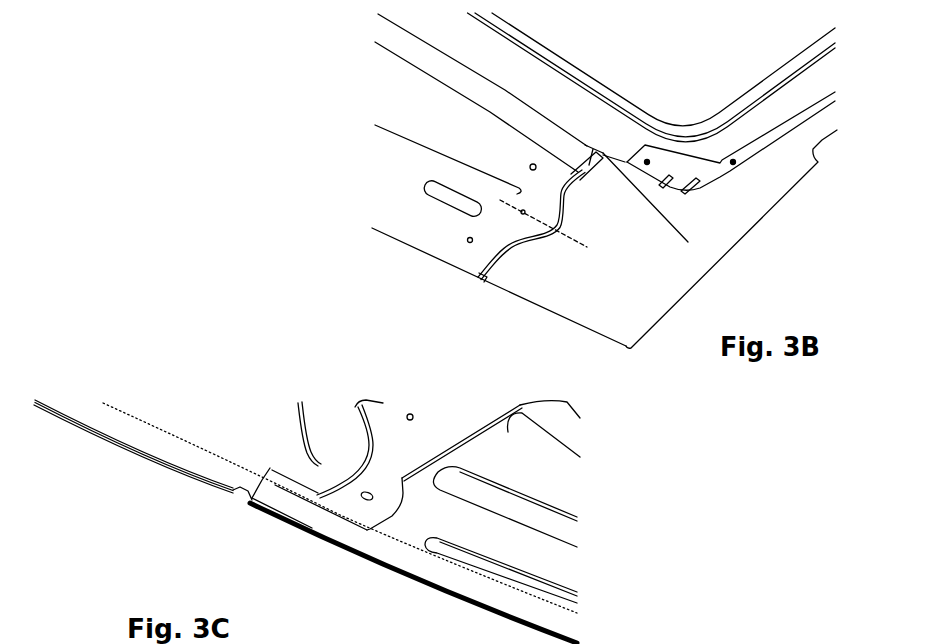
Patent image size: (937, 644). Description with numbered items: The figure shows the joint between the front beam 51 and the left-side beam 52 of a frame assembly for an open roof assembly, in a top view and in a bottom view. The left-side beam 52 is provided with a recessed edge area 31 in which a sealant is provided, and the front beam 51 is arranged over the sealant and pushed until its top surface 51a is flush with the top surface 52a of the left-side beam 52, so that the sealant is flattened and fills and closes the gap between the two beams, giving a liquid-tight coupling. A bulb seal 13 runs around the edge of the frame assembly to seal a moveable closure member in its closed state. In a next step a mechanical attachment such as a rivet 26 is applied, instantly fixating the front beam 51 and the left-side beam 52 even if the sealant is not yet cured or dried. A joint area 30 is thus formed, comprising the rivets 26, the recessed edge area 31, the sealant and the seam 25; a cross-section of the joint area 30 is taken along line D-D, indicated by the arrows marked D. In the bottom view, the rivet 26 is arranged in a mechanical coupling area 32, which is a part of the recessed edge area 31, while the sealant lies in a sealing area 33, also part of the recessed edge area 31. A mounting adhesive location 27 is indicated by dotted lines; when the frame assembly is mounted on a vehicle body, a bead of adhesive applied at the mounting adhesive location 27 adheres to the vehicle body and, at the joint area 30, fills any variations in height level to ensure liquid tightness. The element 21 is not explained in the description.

In FIG. 3B, the bulb seal 13 is at (733, 106).
In FIG. 3B, the protrusion 21 is at (442, 190).
In FIG. 3B, the seam 25 is at (522, 252).
In FIG. 3B, the rivet 26 is at (466, 240).
In FIG. 3C, the rivet 26 is at (403, 418).
In FIG. 3C, the mounting adhesive location 27 is at (511, 608).
In FIG. 3B, the joint area 30 is at (498, 295).
In FIG. 3C, the joint area 30 is at (330, 563).
In FIG. 3C, the recessed edge area 31 is at (502, 396).
In FIG. 3C, the mechanical coupling area 32 is at (403, 450).
In FIG. 3C, the sealing area 33 is at (313, 468).
In FIG. 3B, the front beam 51 is at (398, 172).
In FIG. 3C, the front beam 51 is at (502, 502).
In FIG. 3B, the top surface 51a is at (500, 97).
In FIG. 3B, the left-side beam 52 is at (745, 192).
In FIG. 3C, the left-side beam 52 is at (305, 521).
In FIG. 3B, the top surface 52a is at (719, 168).
In FIG. 3B, the line D- D is at (500, 200).